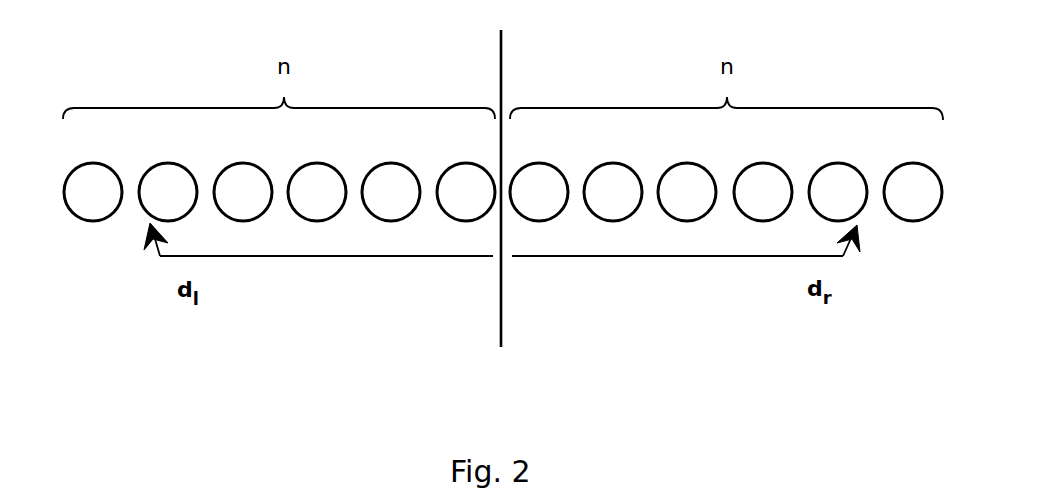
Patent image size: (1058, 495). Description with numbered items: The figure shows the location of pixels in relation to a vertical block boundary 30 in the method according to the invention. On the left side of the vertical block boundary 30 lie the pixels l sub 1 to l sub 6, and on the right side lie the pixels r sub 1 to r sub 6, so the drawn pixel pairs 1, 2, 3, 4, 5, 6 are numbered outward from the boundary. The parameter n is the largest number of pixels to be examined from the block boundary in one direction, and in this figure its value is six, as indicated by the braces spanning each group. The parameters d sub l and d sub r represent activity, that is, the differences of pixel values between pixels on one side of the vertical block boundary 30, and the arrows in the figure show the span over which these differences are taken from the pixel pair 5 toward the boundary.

The vertical block boundary 30 is at (501, 275).
The first sample pair (l1, r1) adjacent to center line 1 is at (502, 192).
The second sample pair (l2, r2) 2 is at (502, 192).
The third sample pair (l3, r3) 3 is at (502, 192).
The fourth sample pair (l4, r4) 4 is at (503, 192).
The fifth sample pair (l5, r5) at distance d_l / d_r 5 is at (503, 192).
The sixth sample pair (l6, r6) 6 is at (503, 192).